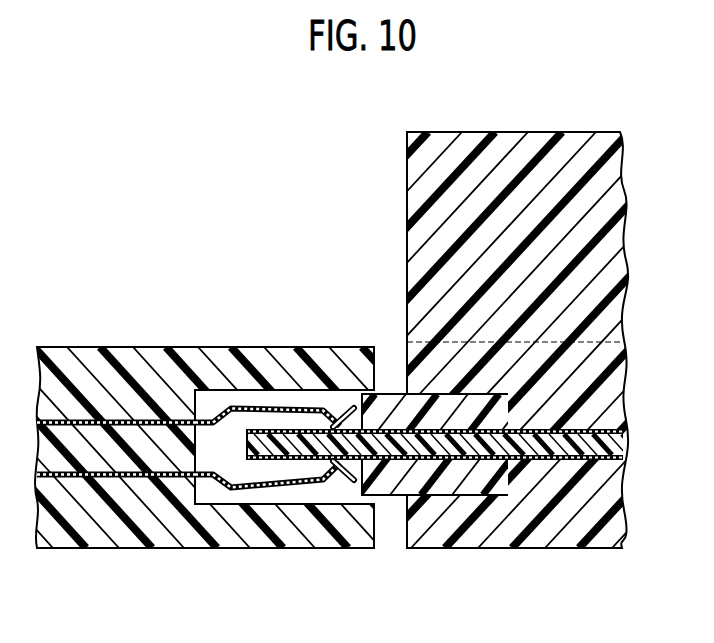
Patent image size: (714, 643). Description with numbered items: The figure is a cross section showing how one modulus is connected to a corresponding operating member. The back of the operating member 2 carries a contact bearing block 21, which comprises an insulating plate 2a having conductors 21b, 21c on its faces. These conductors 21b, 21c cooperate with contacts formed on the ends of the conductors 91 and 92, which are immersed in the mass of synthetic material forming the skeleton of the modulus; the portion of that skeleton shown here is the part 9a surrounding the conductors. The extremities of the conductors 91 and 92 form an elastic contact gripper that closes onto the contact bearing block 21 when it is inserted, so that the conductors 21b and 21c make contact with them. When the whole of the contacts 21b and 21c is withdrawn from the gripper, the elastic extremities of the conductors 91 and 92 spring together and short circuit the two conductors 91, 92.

The operating member 2 is at (467, 247).
The insulating plate 2a is at (266, 460).
The mating housing 9a is at (138, 378).
The conductor 91 is at (240, 408).
The conductor 92 is at (224, 489).
The contact bearing block 21 is at (388, 394).
The conductor 21b is at (312, 429).
The conductor 21c is at (313, 461).